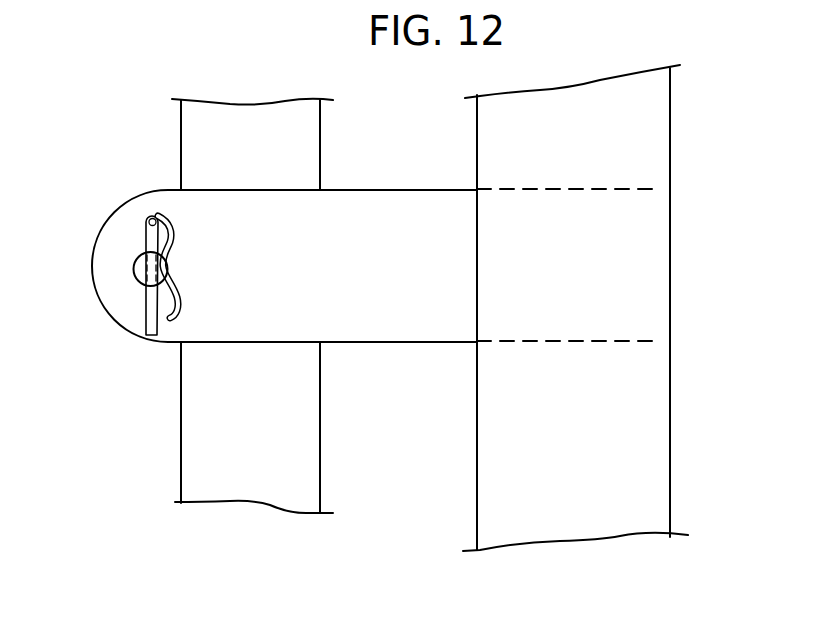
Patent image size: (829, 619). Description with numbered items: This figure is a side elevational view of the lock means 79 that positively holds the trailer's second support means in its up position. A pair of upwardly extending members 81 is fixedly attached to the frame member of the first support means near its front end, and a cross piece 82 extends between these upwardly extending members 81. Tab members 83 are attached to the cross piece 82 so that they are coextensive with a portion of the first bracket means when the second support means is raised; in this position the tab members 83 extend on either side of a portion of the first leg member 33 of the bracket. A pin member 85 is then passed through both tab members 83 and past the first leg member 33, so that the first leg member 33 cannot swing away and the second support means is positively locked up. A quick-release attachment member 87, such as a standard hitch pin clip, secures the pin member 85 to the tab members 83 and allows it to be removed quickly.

The first elongated leg member 33 is at (293, 448).
The lock means 79 is at (126, 354).
The upwardly extending members 81 is at (644, 148).
The cross piece 82 is at (645, 340).
The tab members 83 is at (105, 243).
The pin member 85 is at (134, 270).
The quick-release attachment member 87 is at (157, 213).